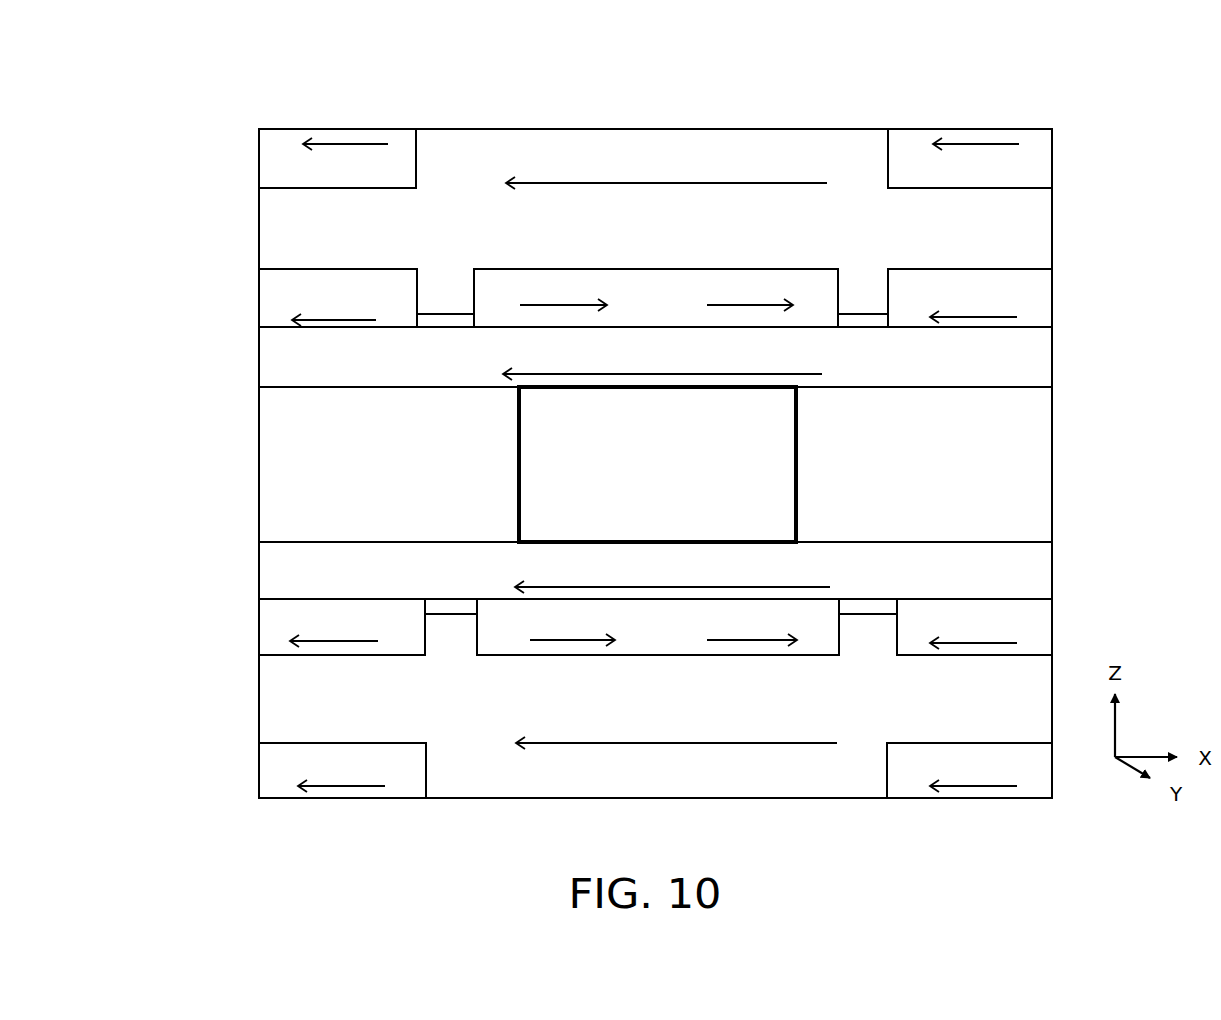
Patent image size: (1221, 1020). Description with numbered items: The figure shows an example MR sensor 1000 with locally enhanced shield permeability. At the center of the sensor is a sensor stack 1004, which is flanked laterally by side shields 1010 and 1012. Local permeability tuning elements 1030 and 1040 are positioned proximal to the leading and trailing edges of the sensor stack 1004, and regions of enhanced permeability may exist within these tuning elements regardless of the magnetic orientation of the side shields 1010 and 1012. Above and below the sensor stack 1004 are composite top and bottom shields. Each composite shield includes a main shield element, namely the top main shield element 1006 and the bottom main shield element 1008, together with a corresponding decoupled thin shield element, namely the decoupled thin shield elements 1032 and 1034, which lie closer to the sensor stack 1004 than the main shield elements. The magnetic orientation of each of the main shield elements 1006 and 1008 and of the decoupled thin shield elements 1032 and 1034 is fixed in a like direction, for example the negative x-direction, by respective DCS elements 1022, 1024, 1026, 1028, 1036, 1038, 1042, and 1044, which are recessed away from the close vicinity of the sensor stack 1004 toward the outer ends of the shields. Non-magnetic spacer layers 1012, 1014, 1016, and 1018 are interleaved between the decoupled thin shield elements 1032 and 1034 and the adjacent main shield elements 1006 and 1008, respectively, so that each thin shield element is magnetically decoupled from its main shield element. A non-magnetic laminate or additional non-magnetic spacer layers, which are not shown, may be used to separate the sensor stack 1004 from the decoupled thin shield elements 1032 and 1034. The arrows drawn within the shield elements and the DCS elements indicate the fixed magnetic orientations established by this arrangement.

The MR sensor 1000 is at (205, 146).
The sensor stack 1004 is at (632, 476).
The main shield element 1006 is at (680, 241).
The main shield element 1008 is at (680, 724).
The side shield 1010 is at (364, 474).
The side shield / non-magnetic spacer layer 1012 is at (452, 328).
The non-magnetic spacer layer 1014 is at (870, 327).
The non-magnetic spacer layer 1016 is at (462, 599).
The non-magnetic spacer layer 1018 is at (877, 599).
The DCS element 1022 is at (312, 168).
The DCS element 1024 is at (943, 168).
The DCS element 1026 is at (312, 308).
The DCS element 1028 is at (943, 306).
The local permeability tuning element 1030 is at (680, 309).
The decoupled thin shield element 1032 is at (680, 367).
The decoupled thin shield element 1034 is at (680, 581).
The DCS element 1036 is at (312, 637).
The DCS element 1038 is at (950, 636).
The local permeability tuning element 1040 is at (680, 638).
The DCS element 1042 is at (317, 779).
The DCS element 1044 is at (943, 779).